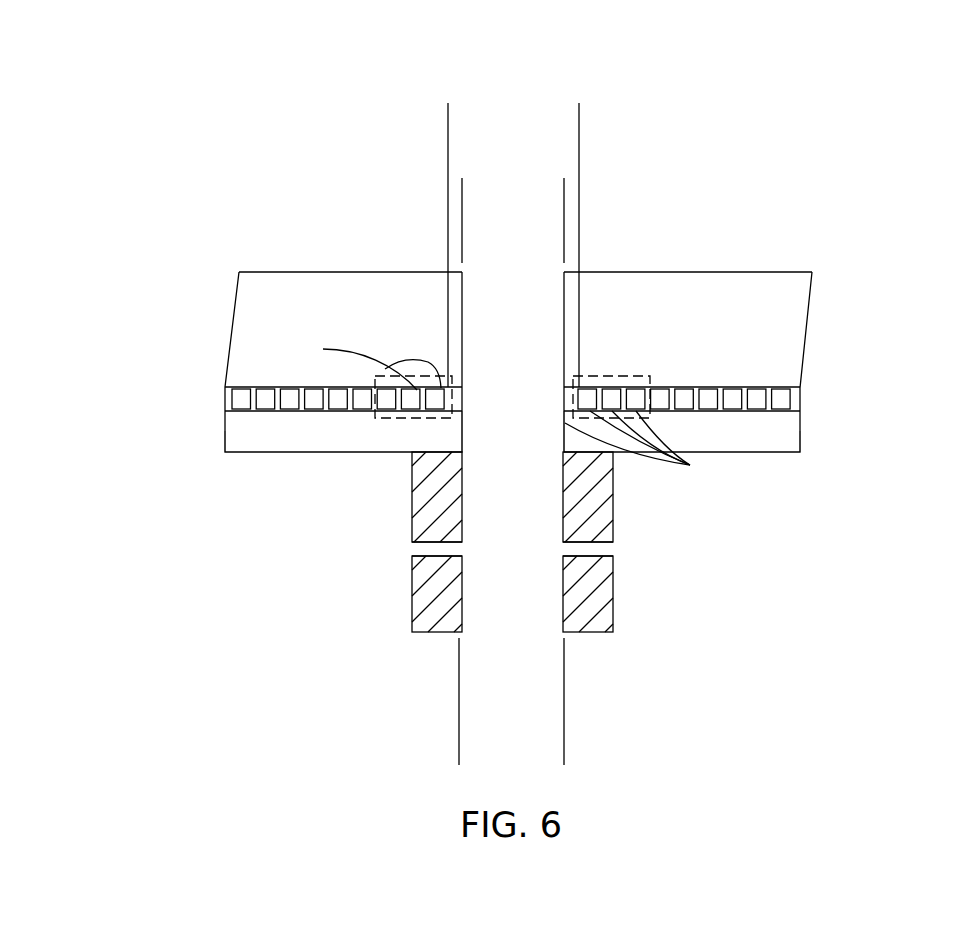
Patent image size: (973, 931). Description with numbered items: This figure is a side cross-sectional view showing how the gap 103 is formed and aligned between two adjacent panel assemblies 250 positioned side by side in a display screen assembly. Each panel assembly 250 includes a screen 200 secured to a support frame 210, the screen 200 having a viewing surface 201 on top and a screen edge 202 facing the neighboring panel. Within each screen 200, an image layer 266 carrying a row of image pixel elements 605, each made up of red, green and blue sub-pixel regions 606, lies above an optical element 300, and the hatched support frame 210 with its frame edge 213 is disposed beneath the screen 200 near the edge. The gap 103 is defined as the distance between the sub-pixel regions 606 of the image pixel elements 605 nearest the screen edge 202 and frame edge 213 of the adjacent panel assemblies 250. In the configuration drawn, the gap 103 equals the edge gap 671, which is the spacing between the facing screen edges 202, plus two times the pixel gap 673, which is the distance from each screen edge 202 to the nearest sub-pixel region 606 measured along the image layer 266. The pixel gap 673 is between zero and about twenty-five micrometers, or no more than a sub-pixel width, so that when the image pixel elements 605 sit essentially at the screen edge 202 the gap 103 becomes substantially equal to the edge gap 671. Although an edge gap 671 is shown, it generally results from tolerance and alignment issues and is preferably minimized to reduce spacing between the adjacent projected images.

The gap 103 is at (665, 118).
The screen 200 is at (227, 366).
The viewing surface 201 is at (280, 272).
The screen edge 202 is at (462, 422).
The support frame 210 is at (427, 468).
The frame edge 213 is at (563, 532).
The panel assembly 250 is at (312, 213).
The image layer 266 is at (218, 403).
The optical element 300 is at (221, 438).
The image pixel element 605 is at (404, 345).
The sub-pixel region 606 is at (323, 349).
The edge gap 671 is at (650, 743).
The pixel gap 673 is at (493, 198).